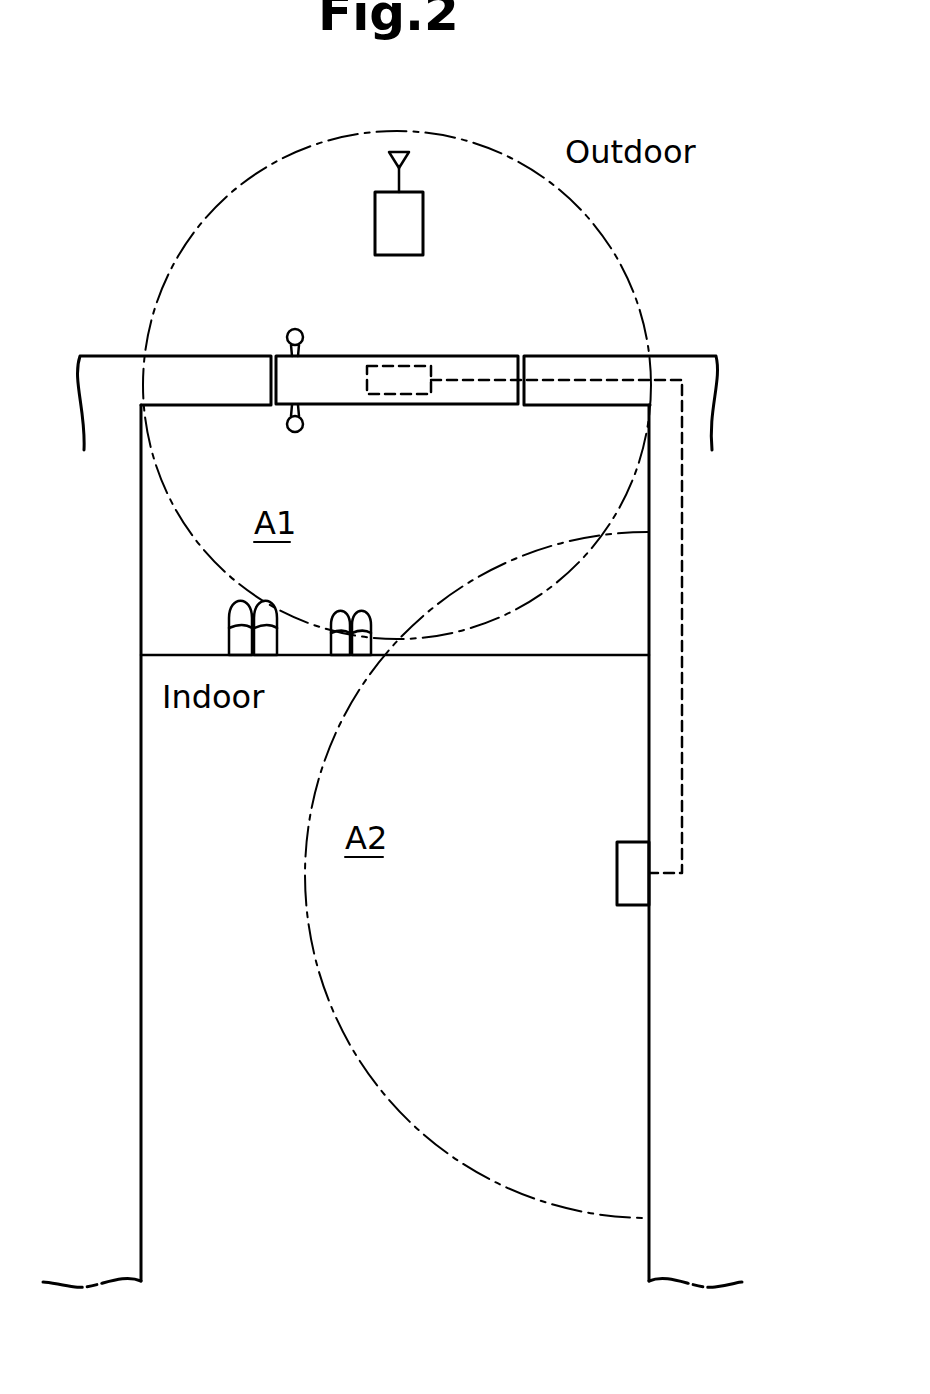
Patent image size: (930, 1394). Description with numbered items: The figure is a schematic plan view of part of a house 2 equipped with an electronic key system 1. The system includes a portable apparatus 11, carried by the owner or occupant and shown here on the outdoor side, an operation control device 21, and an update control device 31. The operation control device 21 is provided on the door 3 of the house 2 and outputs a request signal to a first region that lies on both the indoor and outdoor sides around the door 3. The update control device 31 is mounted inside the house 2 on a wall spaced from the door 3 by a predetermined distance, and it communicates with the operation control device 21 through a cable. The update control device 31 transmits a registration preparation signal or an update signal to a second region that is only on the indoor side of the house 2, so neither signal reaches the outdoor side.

The electronic key system 1 is at (150, 180).
The house 2 is at (688, 357).
The door 3 is at (489, 357).
The portable apparatus 11 is at (425, 222).
The operation control device 21 is at (397, 395).
The update control device 31 is at (617, 872).